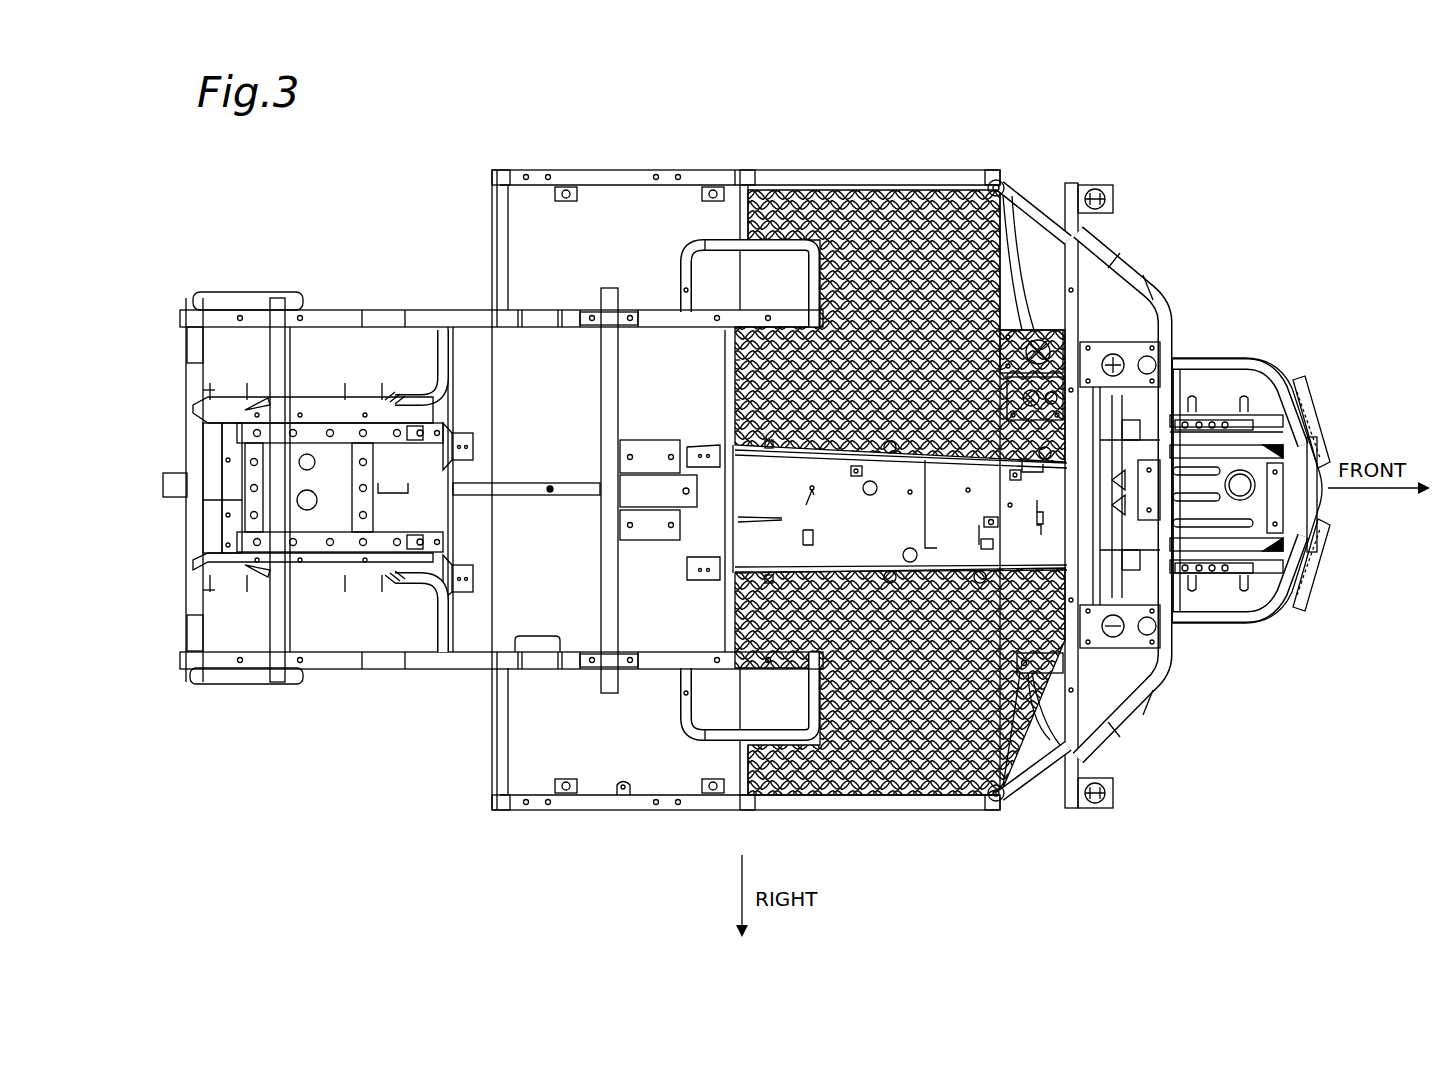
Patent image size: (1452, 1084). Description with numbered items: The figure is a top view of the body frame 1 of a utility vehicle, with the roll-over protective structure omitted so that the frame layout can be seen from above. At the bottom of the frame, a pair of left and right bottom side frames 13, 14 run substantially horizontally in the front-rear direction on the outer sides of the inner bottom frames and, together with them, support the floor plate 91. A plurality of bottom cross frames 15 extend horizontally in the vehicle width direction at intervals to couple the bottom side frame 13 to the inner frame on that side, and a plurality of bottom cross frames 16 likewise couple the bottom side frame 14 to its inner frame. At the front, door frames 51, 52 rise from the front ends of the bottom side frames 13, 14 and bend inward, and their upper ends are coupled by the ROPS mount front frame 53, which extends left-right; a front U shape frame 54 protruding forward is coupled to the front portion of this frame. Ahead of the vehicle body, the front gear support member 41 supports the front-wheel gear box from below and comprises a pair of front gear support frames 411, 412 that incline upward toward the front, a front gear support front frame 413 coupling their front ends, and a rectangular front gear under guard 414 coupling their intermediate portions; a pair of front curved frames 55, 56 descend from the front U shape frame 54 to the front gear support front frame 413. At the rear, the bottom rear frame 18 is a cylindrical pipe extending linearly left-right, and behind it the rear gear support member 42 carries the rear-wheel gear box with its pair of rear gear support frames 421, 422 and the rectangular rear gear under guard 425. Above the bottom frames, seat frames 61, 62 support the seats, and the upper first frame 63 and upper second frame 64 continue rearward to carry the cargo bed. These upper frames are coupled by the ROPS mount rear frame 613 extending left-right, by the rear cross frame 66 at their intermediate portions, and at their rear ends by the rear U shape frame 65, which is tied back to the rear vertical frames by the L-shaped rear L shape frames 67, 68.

The body frame 1 is at (1190, 207).
The bottom side frame 13 is at (657, 808).
The bottom side frame 14 is at (737, 178).
The bottom cross frame 15 is at (503, 757).
The bottom cross frame 16 is at (504, 200).
The bottom rear frame 18 is at (447, 640).
The front gear support member 41 is at (1226, 519).
The rear gear support member 42 is at (294, 483).
The door frame 51 is at (1048, 786).
The door frame 52 is at (1040, 190).
The ROPS mount front frame 53 is at (1073, 195).
The front U shape frame 54 is at (1120, 270).
The front curved frame 55 is at (1272, 618).
The front curved frame 56 is at (1262, 366).
The seat frame 61 is at (696, 665).
The seat frame 62 is at (702, 317).
The upper first frame 63 is at (571, 669).
The upper second frame 64 is at (571, 312).
The rear U shape frame 65 is at (190, 388).
The rear cross frame 66 is at (277, 345).
The rear L shape frame 67 is at (298, 563).
The rear L shape frame 68 is at (300, 418).
The floor plate 91 is at (911, 802).
The front gear support frame 411 is at (1243, 540).
The front gear support frame 412 is at (1229, 448).
The front gear support front frame 413 is at (1313, 438).
The front gear under guard 414 is at (1218, 505).
The rear gear support frame 421 is at (352, 545).
The rear gear support frame 422 is at (370, 436).
The rear gear under guard 425 is at (329, 505).
The ROPS mount rear frame 613 is at (611, 293).